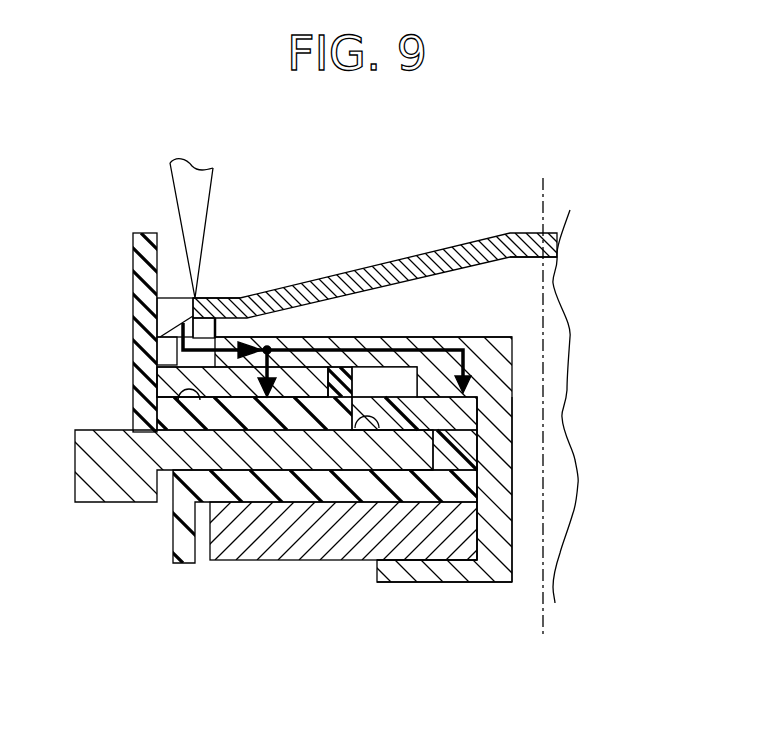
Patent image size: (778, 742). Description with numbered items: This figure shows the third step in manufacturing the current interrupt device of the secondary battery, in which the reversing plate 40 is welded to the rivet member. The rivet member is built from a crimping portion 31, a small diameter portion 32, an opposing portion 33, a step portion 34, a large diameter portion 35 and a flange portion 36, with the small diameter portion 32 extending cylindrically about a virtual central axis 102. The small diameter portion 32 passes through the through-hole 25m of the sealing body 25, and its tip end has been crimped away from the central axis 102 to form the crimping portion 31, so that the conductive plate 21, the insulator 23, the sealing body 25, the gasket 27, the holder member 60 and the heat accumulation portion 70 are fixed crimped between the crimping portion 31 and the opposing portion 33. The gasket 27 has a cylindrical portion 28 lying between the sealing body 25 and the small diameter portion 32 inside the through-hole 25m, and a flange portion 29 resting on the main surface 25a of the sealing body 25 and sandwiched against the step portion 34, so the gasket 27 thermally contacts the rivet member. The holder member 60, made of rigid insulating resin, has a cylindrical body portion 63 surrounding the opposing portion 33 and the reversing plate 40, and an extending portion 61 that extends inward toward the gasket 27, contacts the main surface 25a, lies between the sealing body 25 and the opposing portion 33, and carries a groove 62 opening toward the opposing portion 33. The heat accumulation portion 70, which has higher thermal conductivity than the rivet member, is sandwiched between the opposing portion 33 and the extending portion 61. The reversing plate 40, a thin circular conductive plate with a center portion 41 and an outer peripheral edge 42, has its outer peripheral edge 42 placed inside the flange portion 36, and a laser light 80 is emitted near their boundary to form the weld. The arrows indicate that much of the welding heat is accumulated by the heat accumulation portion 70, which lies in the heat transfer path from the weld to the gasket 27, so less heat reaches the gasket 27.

The conductive plate 21 is at (323, 533).
The insulator 23 is at (267, 508).
The sealing body 25 is at (213, 453).
The main surface 25a is at (380, 413).
The through-hole 25m is at (436, 440).
The gasket 27 is at (501, 419).
The cylindrical portion 28 is at (460, 447).
The flange portion 29 is at (418, 412).
The crimping portion 31 is at (465, 572).
The small diameter portion 32 is at (500, 540).
The opposing portion 33 is at (332, 343).
The step portion 34 is at (428, 368).
The large diameter portion 35 is at (203, 332).
The flange portion 36 is at (173, 307).
The reversing plate 40 is at (390, 218).
The center portion 41 is at (527, 247).
The outer peripheral edge 42 is at (207, 307).
The holder member 60 is at (183, 440).
The extending portion 61 is at (170, 417).
The groove 62 is at (185, 376).
The body portion 63 is at (142, 317).
The heat accumulation portion 70 is at (302, 382).
The laser light 80 is at (178, 193).
The central axis 102 is at (545, 615).